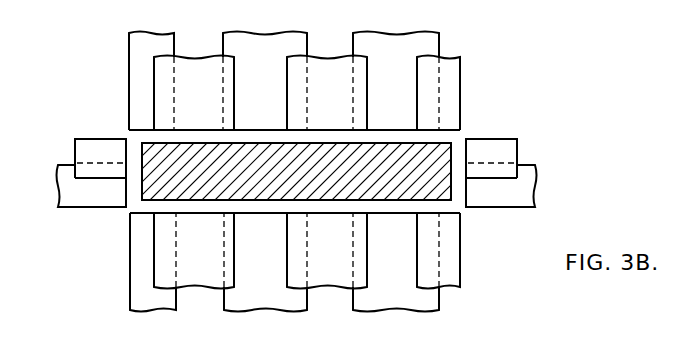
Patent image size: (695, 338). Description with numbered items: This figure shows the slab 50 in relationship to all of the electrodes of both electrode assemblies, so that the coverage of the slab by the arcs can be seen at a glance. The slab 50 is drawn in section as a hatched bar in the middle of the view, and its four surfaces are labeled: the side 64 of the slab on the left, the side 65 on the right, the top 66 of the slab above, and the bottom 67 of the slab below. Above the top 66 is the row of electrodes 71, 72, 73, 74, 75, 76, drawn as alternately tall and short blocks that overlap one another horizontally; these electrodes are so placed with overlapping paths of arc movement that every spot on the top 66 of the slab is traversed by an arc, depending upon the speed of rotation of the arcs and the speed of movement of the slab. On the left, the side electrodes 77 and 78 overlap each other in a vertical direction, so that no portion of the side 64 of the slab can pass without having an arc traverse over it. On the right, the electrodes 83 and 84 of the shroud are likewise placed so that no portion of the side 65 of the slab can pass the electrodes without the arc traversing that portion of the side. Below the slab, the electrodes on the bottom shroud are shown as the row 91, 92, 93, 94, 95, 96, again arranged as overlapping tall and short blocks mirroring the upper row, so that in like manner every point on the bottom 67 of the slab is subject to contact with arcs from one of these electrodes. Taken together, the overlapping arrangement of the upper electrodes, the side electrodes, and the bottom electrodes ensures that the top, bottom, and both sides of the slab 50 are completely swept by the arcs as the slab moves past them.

The slab 50 is at (396, 186).
The side of the slab 64 is at (142, 143).
The side of the slab 65 is at (451, 143).
The top of the slab 66 is at (197, 143).
The bottom of the slab 67 is at (262, 200).
The electrode 71 is at (129, 69).
The electrode 72 is at (197, 57).
The electrode 73 is at (264, 33).
The electrode 74 is at (331, 57).
The electrode 75 is at (395, 33).
The electrode 76 is at (460, 72).
The side electrode 77 is at (75, 149).
The side electrode 78 is at (58, 187).
The electrode 83 is at (517, 143).
The electrode 84 is at (535, 185).
The electrode 91 is at (130, 302).
The electrode 92 is at (197, 287).
The electrode 93 is at (265, 310).
The electrode 94 is at (333, 287).
The electrode 95 is at (417, 310).
The electrode 96 is at (460, 280).